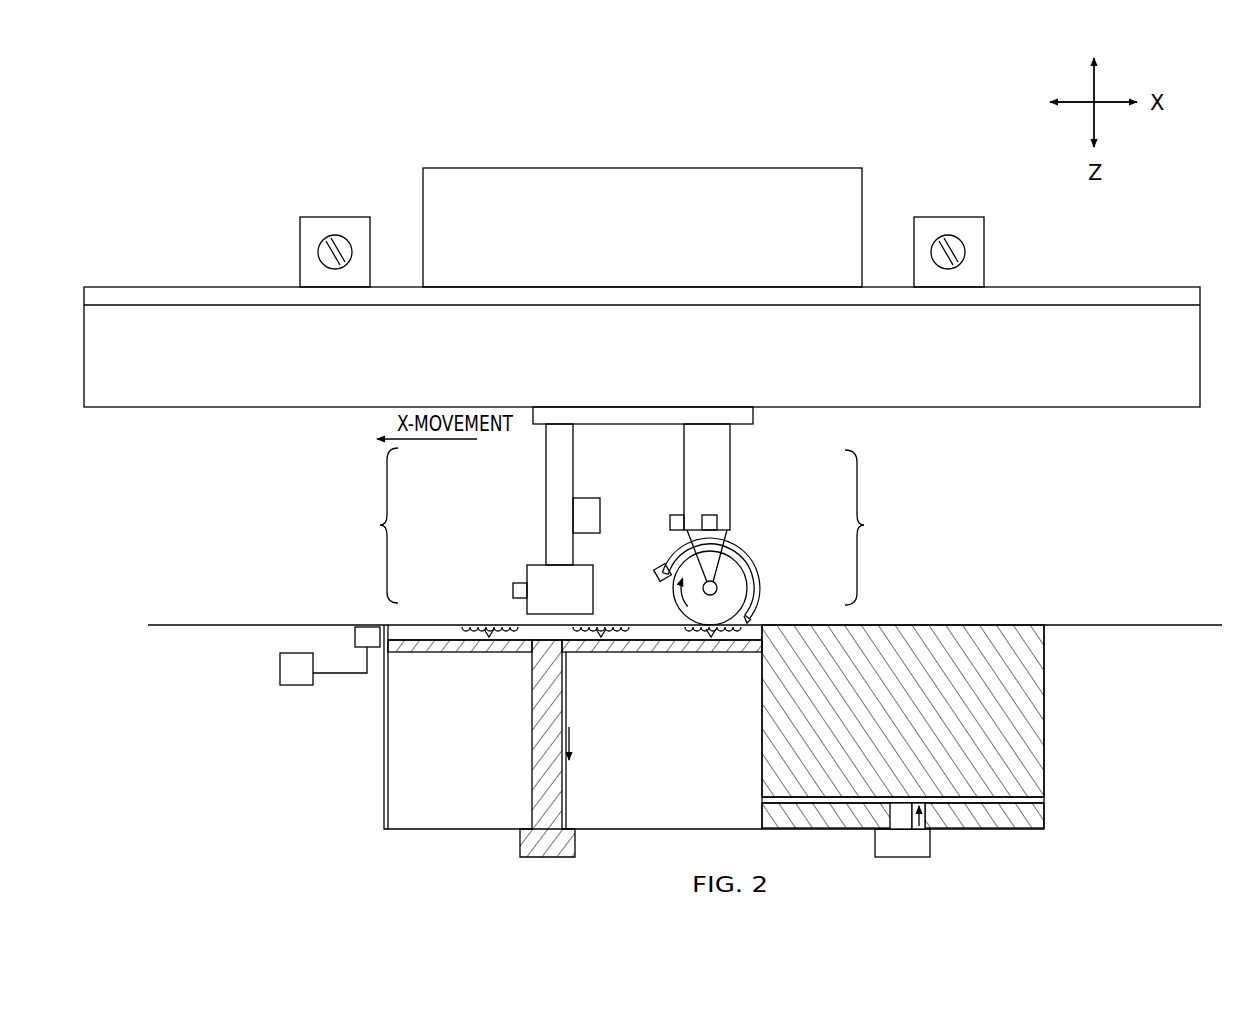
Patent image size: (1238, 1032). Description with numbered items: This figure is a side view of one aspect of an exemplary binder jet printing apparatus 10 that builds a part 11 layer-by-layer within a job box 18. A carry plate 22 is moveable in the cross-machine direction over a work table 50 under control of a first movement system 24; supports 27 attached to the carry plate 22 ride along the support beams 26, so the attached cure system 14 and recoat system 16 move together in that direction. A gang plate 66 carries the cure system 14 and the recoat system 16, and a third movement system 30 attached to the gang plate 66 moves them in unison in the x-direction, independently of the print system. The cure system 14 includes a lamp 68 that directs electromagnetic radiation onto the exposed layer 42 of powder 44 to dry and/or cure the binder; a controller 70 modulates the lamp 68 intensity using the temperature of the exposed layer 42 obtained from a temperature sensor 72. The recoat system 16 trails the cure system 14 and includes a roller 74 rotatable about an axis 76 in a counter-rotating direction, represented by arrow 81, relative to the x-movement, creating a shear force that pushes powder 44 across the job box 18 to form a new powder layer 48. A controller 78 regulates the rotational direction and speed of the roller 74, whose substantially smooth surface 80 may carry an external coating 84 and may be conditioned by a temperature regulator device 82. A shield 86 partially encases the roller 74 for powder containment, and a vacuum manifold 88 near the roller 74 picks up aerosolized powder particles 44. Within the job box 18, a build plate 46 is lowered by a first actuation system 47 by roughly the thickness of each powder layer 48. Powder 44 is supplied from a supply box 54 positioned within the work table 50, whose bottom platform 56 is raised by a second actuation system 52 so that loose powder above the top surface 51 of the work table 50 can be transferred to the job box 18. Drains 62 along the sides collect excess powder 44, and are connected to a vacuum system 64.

The binder jet printing apparatus 10 is at (280, 83).
The part 11 is at (478, 637).
The cure system 14 is at (374, 525).
The recoat system 16 is at (865, 527).
The job box 18 is at (382, 782).
The carry plate 22 is at (670, 297).
The first movement system 24 is at (672, 128).
The support beams 26 is at (333, 240).
The supports 27 is at (298, 250).
The third movement system 30 is at (1058, 410).
The exposed layer 42 is at (437, 625).
The powder 44 is at (1027, 727).
The build plate 46 is at (437, 653).
The first actuation system 47 is at (582, 838).
The powder layer 48 is at (452, 633).
The work table 50 is at (1207, 625).
The top surface 51 is at (1105, 622).
The second actuation system 52 is at (933, 838).
The supply box 54 is at (1048, 672).
The bottom platform 56 is at (1017, 800).
The drains 62 is at (367, 630).
The vacuum system 64 is at (290, 670).
The gang plate 66 is at (753, 412).
The lamp 68 is at (560, 519).
The controller 70 is at (587, 513).
The temperature sensor 72 is at (513, 588).
The roller 74 is at (735, 576).
The axis 76 is at (720, 593).
The controller 78 is at (712, 515).
The surface 80 is at (747, 608).
The arrow 81 is at (677, 597).
The temperature regulator device 82 is at (661, 566).
The external coating 84 is at (676, 614).
The shield 86 is at (743, 548).
The vacuum manifold 88 is at (678, 518).